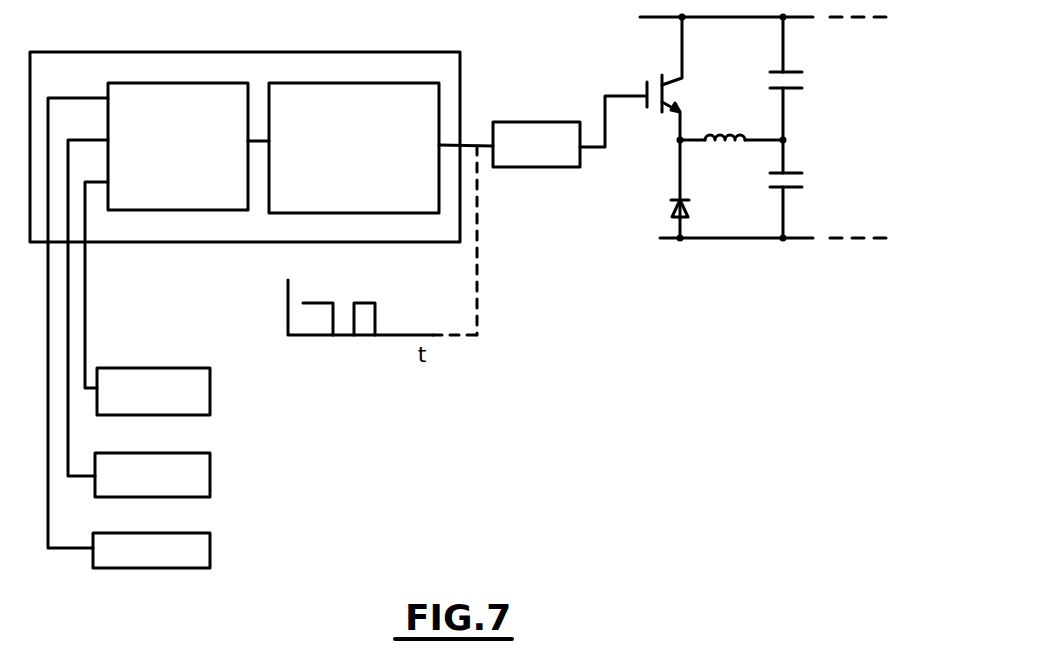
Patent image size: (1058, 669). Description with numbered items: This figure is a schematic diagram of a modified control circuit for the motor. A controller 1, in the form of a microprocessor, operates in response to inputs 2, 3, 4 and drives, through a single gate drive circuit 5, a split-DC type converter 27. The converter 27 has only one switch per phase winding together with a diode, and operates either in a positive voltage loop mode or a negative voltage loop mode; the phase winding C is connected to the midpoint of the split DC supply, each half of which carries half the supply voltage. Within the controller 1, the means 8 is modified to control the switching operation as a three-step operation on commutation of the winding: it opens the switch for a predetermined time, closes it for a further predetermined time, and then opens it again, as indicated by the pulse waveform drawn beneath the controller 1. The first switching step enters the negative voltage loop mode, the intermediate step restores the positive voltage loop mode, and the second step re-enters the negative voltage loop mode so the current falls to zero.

The controller 1 is at (149, 105).
The means 8 is at (417, 112).
The gate drive circuit 5 is at (549, 150).
The input 2 is at (200, 398).
The input 3 is at (200, 483).
The input 4 is at (200, 555).
The split-DC type converter 27 is at (765, 177).
The choke coil C is at (733, 132).